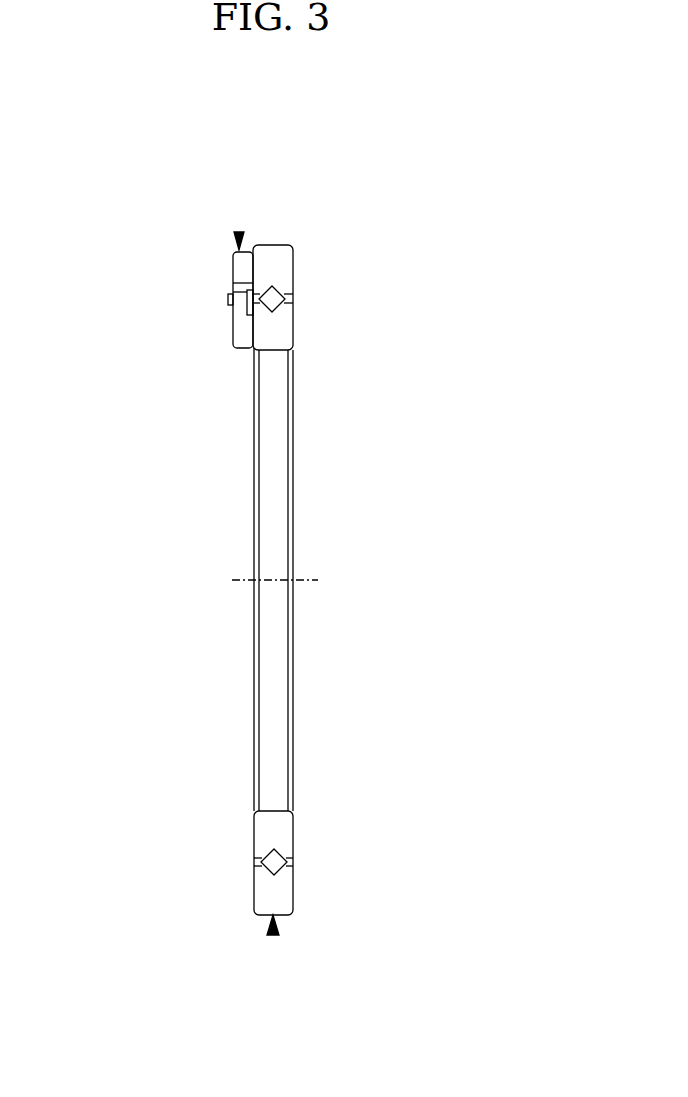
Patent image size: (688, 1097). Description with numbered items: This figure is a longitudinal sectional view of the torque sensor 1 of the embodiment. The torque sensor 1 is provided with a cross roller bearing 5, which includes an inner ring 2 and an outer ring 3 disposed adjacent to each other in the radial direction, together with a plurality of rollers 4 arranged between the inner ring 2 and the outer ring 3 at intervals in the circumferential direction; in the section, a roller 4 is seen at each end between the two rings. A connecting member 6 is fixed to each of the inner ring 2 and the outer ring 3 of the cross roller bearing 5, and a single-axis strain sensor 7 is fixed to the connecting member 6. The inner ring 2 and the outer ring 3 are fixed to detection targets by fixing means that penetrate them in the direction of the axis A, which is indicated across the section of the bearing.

The torque sensor 1 is at (96, 209).
The inner ring 2 is at (293, 830).
The outer ring 3 is at (293, 887).
The rollers 4 is at (284, 291).
The cross roller bearing 5 is at (273, 935).
The connecting member 6 is at (240, 232).
The single-axis strain sensor 7 is at (228, 299).
The axis A is at (243, 582).